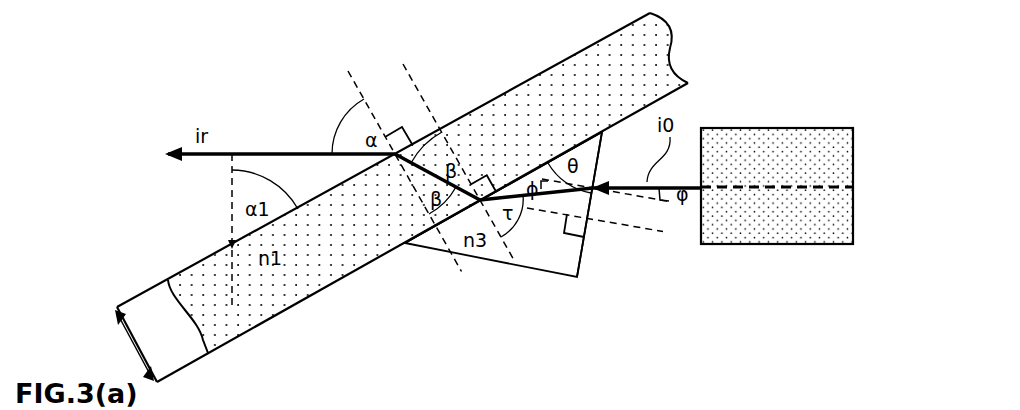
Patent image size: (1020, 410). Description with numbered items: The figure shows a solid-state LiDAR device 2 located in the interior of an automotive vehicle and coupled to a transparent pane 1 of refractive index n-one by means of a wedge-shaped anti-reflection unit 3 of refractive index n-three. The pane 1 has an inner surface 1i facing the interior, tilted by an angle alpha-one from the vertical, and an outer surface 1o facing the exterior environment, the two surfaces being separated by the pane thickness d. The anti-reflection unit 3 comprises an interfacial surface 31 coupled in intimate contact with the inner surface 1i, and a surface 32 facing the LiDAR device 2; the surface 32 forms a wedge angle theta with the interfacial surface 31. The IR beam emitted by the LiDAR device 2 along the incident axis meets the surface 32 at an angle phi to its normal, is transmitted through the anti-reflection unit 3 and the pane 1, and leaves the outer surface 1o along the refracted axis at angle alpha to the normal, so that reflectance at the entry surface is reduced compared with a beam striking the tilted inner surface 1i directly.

The transparent pane 1 is at (200, 298).
The outer surface of the pane 1o is at (182, 270).
The inner surface of the pane 1i is at (328, 289).
The LiDAR device 2 is at (733, 245).
The anti-reflection unit 3 is at (556, 273).
The interfacial surface of the anti-reflection unit 31 is at (567, 140).
The surface of the anti-reflection unit 32 is at (586, 262).